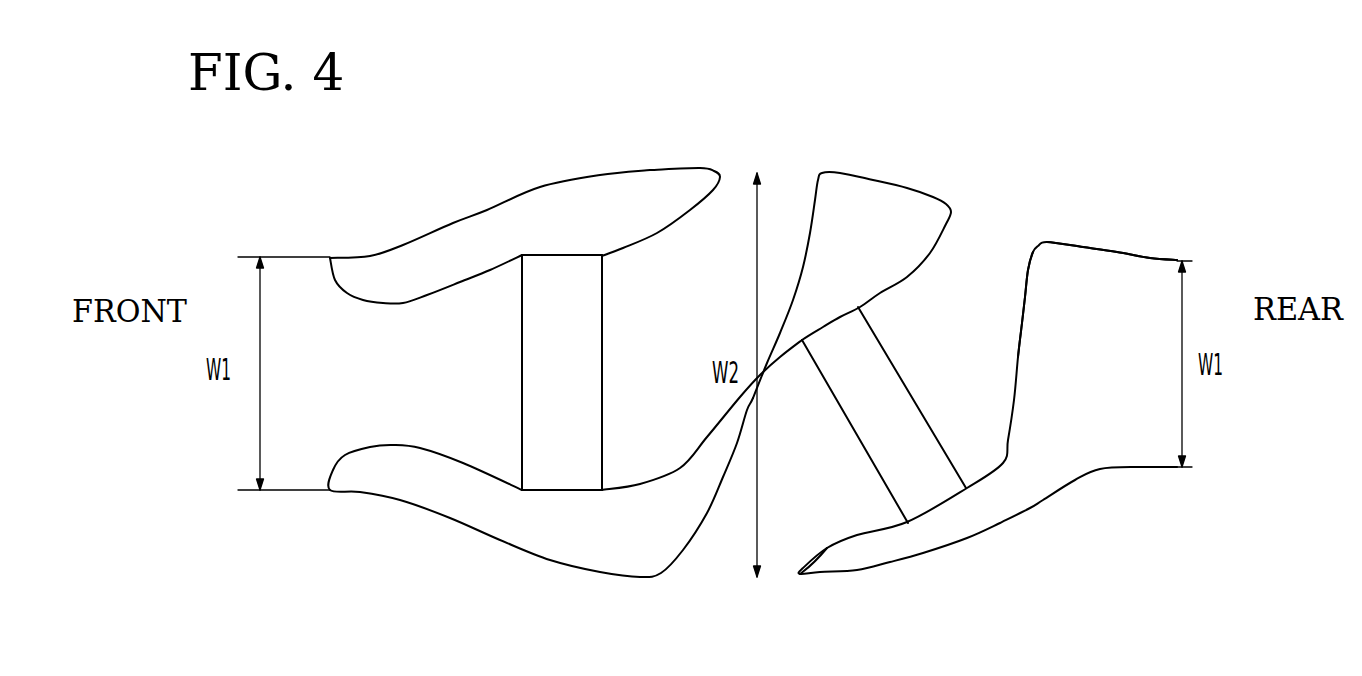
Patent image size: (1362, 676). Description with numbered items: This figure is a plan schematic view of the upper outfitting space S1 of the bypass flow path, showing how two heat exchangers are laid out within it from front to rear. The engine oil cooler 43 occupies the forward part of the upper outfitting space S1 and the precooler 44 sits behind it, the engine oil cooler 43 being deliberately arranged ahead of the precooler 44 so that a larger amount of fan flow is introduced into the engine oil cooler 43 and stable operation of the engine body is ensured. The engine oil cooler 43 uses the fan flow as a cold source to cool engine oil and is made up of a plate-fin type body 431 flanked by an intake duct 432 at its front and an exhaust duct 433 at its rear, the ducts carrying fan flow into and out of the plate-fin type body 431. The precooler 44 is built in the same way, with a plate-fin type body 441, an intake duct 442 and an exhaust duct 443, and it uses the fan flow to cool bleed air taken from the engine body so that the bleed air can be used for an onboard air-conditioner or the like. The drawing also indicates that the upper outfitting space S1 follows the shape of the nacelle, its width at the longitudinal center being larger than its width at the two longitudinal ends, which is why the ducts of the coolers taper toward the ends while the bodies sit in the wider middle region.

The engine oil cooler 43 is at (514, 248).
The plate-fin type body 431 is at (545, 254).
The intake duct 432 is at (398, 302).
The exhaust duct 433 is at (673, 222).
The precooler 44 is at (986, 495).
The plate-fin type body 441 is at (938, 510).
The intake duct 442 is at (845, 546).
The exhaust duct 443 is at (1022, 320).
The upper outfitting space S1 is at (1088, 275).